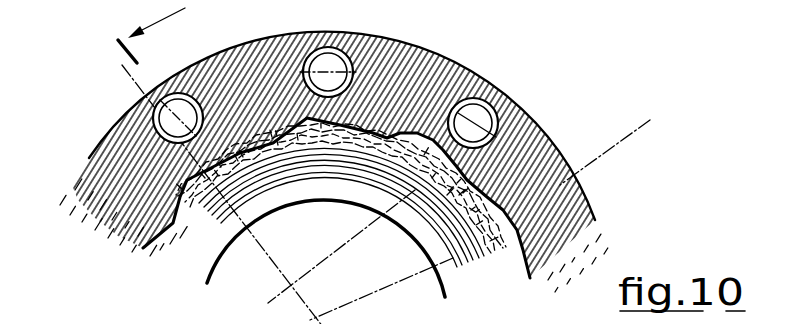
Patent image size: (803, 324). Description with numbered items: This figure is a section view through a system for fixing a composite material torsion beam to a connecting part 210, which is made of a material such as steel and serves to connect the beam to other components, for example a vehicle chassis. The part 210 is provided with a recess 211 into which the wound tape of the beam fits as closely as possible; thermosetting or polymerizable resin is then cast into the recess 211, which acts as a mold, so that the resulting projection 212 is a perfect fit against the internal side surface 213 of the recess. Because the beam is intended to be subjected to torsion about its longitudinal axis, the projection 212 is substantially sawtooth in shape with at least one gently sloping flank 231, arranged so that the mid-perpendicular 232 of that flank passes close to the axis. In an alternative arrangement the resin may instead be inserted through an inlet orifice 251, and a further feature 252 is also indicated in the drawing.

The part 210 is at (537, 123).
The recess 211 is at (302, 46).
The projection 212 is at (455, 166).
The internal side surface 213 is at (457, 112).
The gently sloping flank 231 is at (400, 46).
The mid-perpendicular 232 is at (342, 246).
The inlet orifice 251 is at (299, 257).
The center line 252 is at (350, 291).